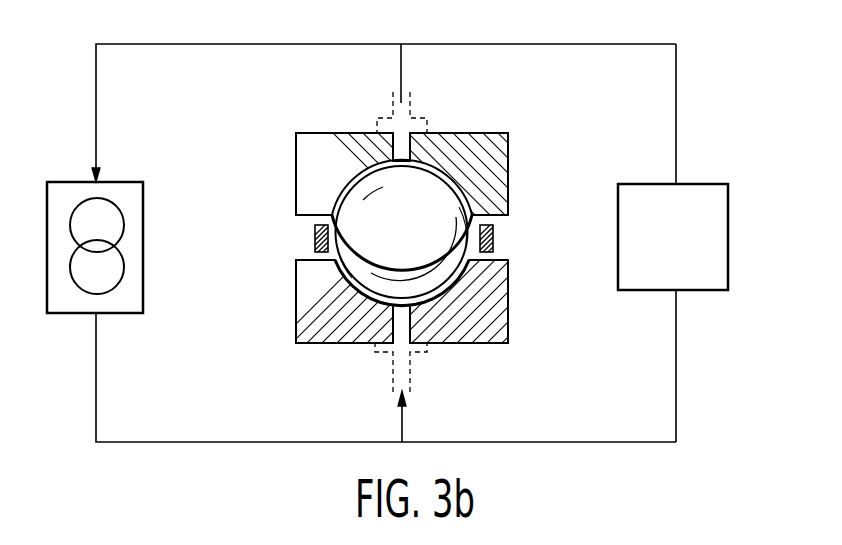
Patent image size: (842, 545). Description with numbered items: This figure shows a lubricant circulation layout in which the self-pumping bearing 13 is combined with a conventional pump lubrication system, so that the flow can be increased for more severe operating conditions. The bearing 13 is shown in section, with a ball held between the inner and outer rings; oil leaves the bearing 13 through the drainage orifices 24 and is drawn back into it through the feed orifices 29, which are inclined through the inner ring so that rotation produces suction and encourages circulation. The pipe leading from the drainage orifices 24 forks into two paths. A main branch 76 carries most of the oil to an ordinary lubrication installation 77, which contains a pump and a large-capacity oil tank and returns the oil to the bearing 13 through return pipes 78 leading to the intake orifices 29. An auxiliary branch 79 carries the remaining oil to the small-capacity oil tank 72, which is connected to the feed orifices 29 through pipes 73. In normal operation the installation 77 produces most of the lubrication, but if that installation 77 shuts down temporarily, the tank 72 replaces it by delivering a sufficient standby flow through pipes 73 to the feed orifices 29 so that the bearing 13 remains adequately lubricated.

The bearing 13 is at (281, 191).
The drainage orifices 24 is at (412, 143).
The feed orifices 29 is at (407, 330).
The oil tank 72 is at (698, 245).
The pipes 73 is at (677, 367).
The main branch 76 is at (193, 45).
The lubrication installation 77 is at (130, 311).
The return line 78 is at (196, 444).
The auxiliary branch 79 is at (677, 103).